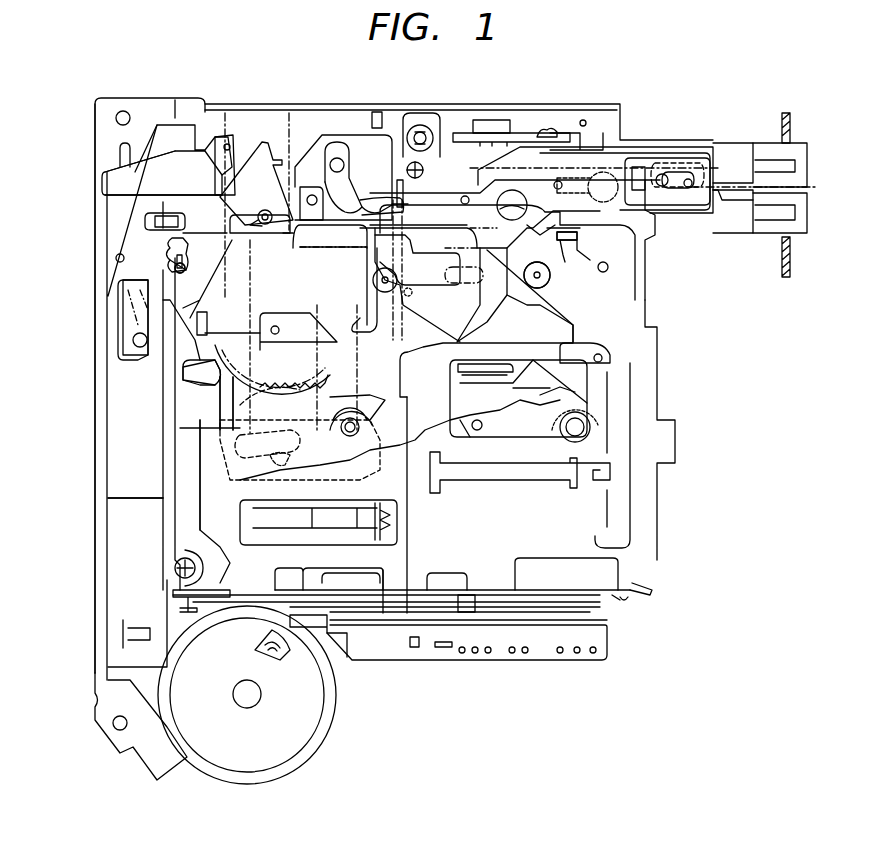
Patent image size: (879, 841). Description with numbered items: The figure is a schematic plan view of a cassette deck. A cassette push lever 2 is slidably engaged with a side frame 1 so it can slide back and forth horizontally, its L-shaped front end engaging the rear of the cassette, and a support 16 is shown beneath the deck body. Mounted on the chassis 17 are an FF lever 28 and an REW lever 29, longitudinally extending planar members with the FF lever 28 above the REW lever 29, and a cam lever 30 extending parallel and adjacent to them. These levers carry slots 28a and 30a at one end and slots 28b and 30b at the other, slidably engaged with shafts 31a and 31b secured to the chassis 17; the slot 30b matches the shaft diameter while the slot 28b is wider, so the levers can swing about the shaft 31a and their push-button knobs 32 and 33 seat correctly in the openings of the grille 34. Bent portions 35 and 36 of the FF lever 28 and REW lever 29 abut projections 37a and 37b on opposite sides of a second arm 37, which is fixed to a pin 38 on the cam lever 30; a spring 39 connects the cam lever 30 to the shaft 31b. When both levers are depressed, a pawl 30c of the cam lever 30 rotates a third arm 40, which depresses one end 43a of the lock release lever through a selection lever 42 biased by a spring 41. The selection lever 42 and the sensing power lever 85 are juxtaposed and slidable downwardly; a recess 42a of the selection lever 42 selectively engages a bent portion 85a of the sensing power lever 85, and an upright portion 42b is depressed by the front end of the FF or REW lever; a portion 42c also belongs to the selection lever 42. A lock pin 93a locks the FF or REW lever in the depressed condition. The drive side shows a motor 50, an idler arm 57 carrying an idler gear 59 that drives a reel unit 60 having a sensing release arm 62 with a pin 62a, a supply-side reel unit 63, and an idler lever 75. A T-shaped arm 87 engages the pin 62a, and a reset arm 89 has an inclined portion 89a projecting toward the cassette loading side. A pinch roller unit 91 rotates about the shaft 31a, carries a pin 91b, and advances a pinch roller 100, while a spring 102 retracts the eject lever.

The side frame 1 is at (545, 555).
The cassette push lever 2 is at (440, 575).
The support post 16 is at (395, 620).
The chassis 17 is at (405, 113).
The FF lever 28 is at (745, 150).
The REW lever 29 is at (730, 230).
The slot 28a is at (255, 220).
The slot 28b is at (670, 163).
The cam lever 30 is at (648, 150).
The slot 30a is at (288, 236).
The slot 30b is at (688, 190).
The pawl 30c is at (273, 160).
The shaft 31a is at (260, 212).
The shaft 31b is at (660, 190).
The push-button knob 32 is at (798, 140).
The push-button knob 33 is at (800, 240).
The grille 34 is at (770, 265).
The bent portion 35 is at (590, 130).
The bent portion 36 is at (572, 242).
The second arm 37 is at (535, 130).
The projection 37a is at (560, 125).
The projection 37b is at (553, 258).
The pin 38 is at (555, 185).
The spring 39 is at (600, 165).
The third arm 40 is at (198, 255).
The spring 41 is at (120, 352).
The selection lever 42 is at (117, 522).
The recess 42a is at (145, 244).
The upright portion 42b is at (110, 178).
The side plate portion 42c is at (202, 110).
The one end of lock release lever 43a is at (120, 630).
The motor 50 is at (325, 725).
The idler arm 57 is at (360, 305).
The idler gear 59 is at (240, 403).
The reel unit 60 is at (328, 406).
The sensing release arm 62 is at (345, 470).
The pin 62a is at (300, 470).
The reel unit 63 is at (541, 419).
The idler lever 75 is at (465, 398).
The sensing power lever 85 is at (110, 210).
The bent portion 85a is at (183, 263).
The T-shaped arm 87 is at (190, 470).
The reset arm 89 is at (180, 430).
The inclined portion 89a is at (200, 385).
The pinch roller unit 91 is at (346, 232).
The pin 91b is at (338, 153).
The lock pin 93a is at (313, 188).
The pinch roller 100 is at (380, 112).
The spring 102 is at (440, 130).